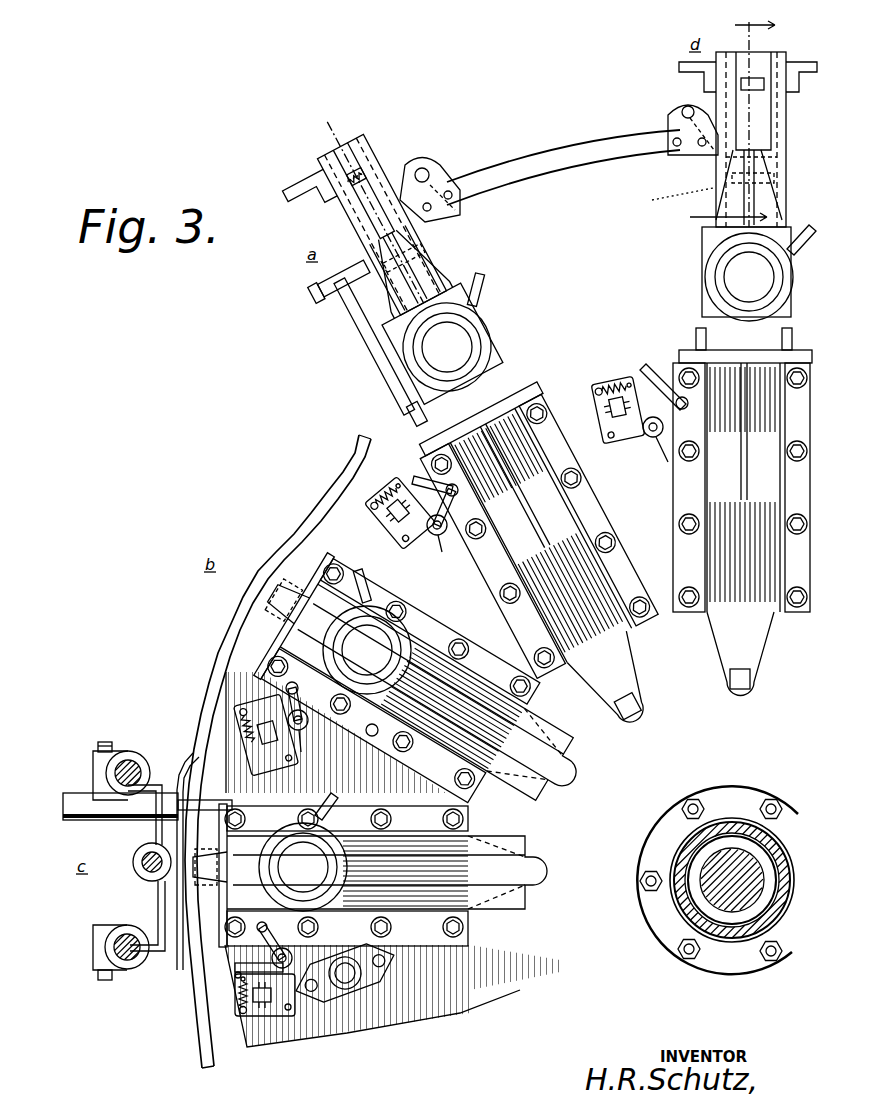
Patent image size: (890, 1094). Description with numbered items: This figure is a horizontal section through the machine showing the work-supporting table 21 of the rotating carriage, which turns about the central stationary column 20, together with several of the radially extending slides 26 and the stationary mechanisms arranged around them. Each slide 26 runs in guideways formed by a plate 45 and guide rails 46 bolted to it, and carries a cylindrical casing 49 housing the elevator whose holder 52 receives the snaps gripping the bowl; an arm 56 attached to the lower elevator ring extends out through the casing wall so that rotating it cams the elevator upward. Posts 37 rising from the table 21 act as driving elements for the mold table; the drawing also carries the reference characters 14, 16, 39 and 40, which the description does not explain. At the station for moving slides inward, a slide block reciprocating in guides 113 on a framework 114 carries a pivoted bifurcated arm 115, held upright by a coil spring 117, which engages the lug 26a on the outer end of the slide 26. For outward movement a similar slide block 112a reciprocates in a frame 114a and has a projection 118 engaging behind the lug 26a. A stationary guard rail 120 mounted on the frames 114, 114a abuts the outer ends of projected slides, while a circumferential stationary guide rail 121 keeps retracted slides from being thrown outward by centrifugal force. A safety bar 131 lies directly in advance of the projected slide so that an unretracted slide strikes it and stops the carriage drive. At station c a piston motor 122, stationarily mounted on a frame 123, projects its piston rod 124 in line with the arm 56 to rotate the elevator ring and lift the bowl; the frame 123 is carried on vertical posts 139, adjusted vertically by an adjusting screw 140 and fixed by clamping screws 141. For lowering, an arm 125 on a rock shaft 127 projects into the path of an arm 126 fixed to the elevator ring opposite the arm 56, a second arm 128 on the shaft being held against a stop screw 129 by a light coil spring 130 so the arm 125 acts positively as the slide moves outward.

The spindle carrier unit 14 is at (321, 113).
The spindle carrier unit in end position 16 is at (726, 116).
The central stationary column or shaft 20 is at (732, 858).
The main work supporting table 21 is at (267, 1040).
The slide 26 is at (395, 280).
The lug 26a is at (778, 157).
The post 37 is at (350, 980).
The bushing 39 is at (713, 827).
The flange bolt 40 is at (693, 807).
The plate 45 is at (725, 645).
The guide rails 46 is at (607, 528).
The cylindrical casing 49 is at (483, 347).
The holder 52 is at (467, 327).
The arm 56 is at (800, 224).
The slide block 112a is at (745, 107).
The guides 113 is at (430, 253).
The framework 114 is at (385, 145).
The frame 114a is at (717, 172).
The bifurcated arm 115 is at (380, 209).
The coil spring 117 is at (400, 160).
The projection 118 is at (662, 200).
The stationary guard rail 120 is at (552, 160).
The stationary guide rail 121 is at (312, 515).
The piston motor 122 is at (67, 790).
The frame 123 is at (160, 835).
The piston rod 124 is at (193, 753).
The arm 125 is at (445, 532).
The arm 126 is at (413, 405).
The rock shaft 127 is at (437, 535).
The arm 128 is at (407, 495).
The stop screw 129 is at (387, 522).
The light coil spring 130 is at (400, 495).
The bar 131 is at (390, 317).
The vertical posts 139 is at (130, 762).
The adjusting screw 140 is at (150, 863).
The clamping screws 141 is at (103, 742).